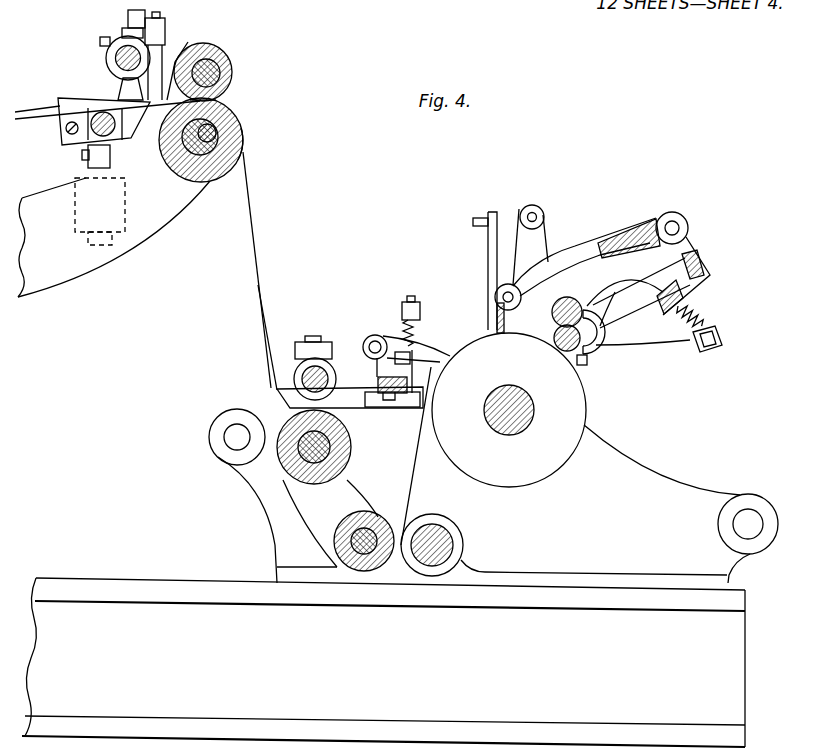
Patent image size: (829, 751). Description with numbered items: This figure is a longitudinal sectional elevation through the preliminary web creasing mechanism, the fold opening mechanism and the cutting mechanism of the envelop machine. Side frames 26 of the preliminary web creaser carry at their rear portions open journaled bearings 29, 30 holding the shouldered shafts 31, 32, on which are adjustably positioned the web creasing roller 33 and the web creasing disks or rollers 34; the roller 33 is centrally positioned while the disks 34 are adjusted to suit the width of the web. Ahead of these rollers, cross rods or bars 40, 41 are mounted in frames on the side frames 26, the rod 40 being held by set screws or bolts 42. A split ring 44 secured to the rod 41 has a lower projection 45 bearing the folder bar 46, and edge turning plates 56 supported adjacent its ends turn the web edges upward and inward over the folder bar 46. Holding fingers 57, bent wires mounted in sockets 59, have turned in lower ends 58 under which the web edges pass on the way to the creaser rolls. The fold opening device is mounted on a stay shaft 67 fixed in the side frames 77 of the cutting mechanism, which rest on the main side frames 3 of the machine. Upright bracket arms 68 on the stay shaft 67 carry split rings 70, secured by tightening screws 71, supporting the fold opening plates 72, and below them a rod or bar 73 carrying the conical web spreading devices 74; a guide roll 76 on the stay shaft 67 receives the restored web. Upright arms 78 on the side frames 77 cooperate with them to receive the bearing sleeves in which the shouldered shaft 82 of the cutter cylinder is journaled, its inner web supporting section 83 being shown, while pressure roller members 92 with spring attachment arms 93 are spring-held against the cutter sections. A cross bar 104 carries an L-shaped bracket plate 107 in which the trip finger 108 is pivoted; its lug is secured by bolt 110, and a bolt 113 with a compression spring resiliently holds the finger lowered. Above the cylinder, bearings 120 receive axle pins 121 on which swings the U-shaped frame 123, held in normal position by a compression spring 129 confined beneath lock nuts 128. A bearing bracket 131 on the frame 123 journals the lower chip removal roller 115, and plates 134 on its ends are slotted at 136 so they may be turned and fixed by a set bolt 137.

The main side frames 3 is at (383, 662).
The side frames 26 is at (78, 270).
The open journaled bearing 29 is at (243, 152).
The open journaled bearing 30 is at (233, 66).
The shouldered shaft 31 is at (240, 110).
The shouldered shaft 32 is at (214, 100).
The web creasing roller 33 is at (242, 122).
The web creasing disks 34 is at (221, 76).
The cross rod 40 is at (117, 127).
The cross rod 41 is at (115, 60).
The set screws 42 is at (86, 157).
The split ring 44 is at (108, 40).
The lower projection 45 is at (120, 84).
The folder bar 46 is at (156, 101).
The edge turning plates 56 is at (70, 100).
The holding fingers 57 is at (164, 50).
The turned in lower ends 58 is at (207, 42).
The sockets 59 is at (128, 14).
The stay shaft 67 is at (445, 546).
The upright bracket arms 68 is at (337, 497).
The split rings 70 is at (296, 370).
The tightening screws 71 is at (296, 345).
The fold opening plates 72 is at (266, 380).
The rod 73 is at (290, 393).
The web spreading devices 74 is at (350, 452).
The guide roll 76 is at (372, 525).
The side frames 77 is at (636, 487).
The upright arms 78 is at (535, 243).
The shouldered shaft 82 is at (513, 414).
The inner web supporting section 83 is at (573, 410).
The pressure roller members 92 is at (496, 322).
The spring attachment arms 93 is at (490, 262).
The cross bar 104 is at (382, 397).
The L-shaped bracket plate 107 is at (407, 375).
The trip finger 108 is at (426, 358).
The bolt 113 is at (412, 300).
The bolt 110 is at (572, 296).
The lower chip removal roller 115 is at (556, 352).
The bearings 120 is at (688, 223).
The axle pins 121 is at (670, 226).
The U-shaped frame 123 is at (654, 318).
The lock nuts 128 is at (720, 342).
The compression spring 129 is at (707, 312).
The bearing bracket 131 is at (625, 342).
The plates 134 is at (590, 306).
The slot 136 is at (650, 332).
The set bolt 137 is at (588, 360).